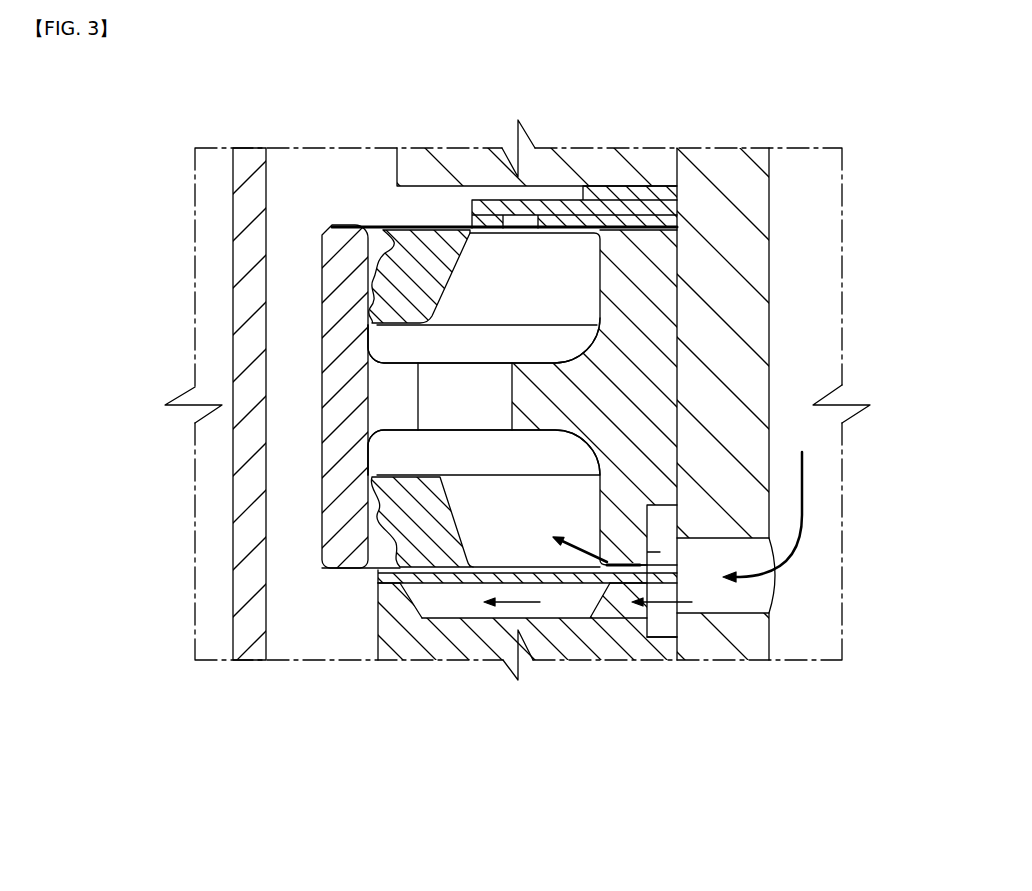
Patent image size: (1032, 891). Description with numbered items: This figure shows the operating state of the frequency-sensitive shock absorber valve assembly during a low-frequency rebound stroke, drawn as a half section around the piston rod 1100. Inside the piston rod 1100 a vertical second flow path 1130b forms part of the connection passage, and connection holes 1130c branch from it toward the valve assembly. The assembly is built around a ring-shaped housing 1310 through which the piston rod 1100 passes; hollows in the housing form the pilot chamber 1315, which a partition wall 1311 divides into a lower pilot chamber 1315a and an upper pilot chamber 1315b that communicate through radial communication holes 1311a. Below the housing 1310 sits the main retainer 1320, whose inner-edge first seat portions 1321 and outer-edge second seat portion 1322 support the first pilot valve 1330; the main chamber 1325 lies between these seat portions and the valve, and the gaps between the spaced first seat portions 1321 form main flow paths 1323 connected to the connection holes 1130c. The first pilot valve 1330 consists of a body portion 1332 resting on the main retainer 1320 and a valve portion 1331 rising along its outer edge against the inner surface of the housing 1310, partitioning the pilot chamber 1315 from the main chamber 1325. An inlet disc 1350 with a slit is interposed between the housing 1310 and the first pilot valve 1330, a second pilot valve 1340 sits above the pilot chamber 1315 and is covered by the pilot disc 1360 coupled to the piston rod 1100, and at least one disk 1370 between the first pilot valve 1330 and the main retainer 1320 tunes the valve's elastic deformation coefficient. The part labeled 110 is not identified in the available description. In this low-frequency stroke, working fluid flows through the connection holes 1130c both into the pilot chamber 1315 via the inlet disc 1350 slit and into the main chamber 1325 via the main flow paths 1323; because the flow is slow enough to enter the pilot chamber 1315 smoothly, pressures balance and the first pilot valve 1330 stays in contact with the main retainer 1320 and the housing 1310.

The casing 110 is at (300, 636).
The piston rod 1100 is at (727, 157).
The second flow path 1130b is at (770, 302).
The connection holes 1130c is at (733, 610).
The housing 1310 is at (335, 302).
The partition wall 1311 is at (516, 445).
The communication holes 1311a is at (468, 393).
The pilot chamber 1315 is at (321, 398).
The lower pilot chamber 1315a is at (413, 466).
The upper pilot chamber 1315b is at (414, 358).
The main retainer 1320 is at (516, 445).
The first seat portions 1321 is at (590, 602).
The second seat portion 1322 is at (378, 596).
The main flow paths 1323 is at (641, 608).
The main chamber 1325 is at (450, 606).
The first pilot valve 1330 is at (516, 445).
The valve portion 1331 is at (390, 496).
The body portion 1332 is at (530, 572).
The second pilot valve 1340 is at (388, 265).
The inlet disc 1350 is at (603, 545).
The pilot disc 1360 is at (446, 212).
The disk 1370 is at (377, 580).